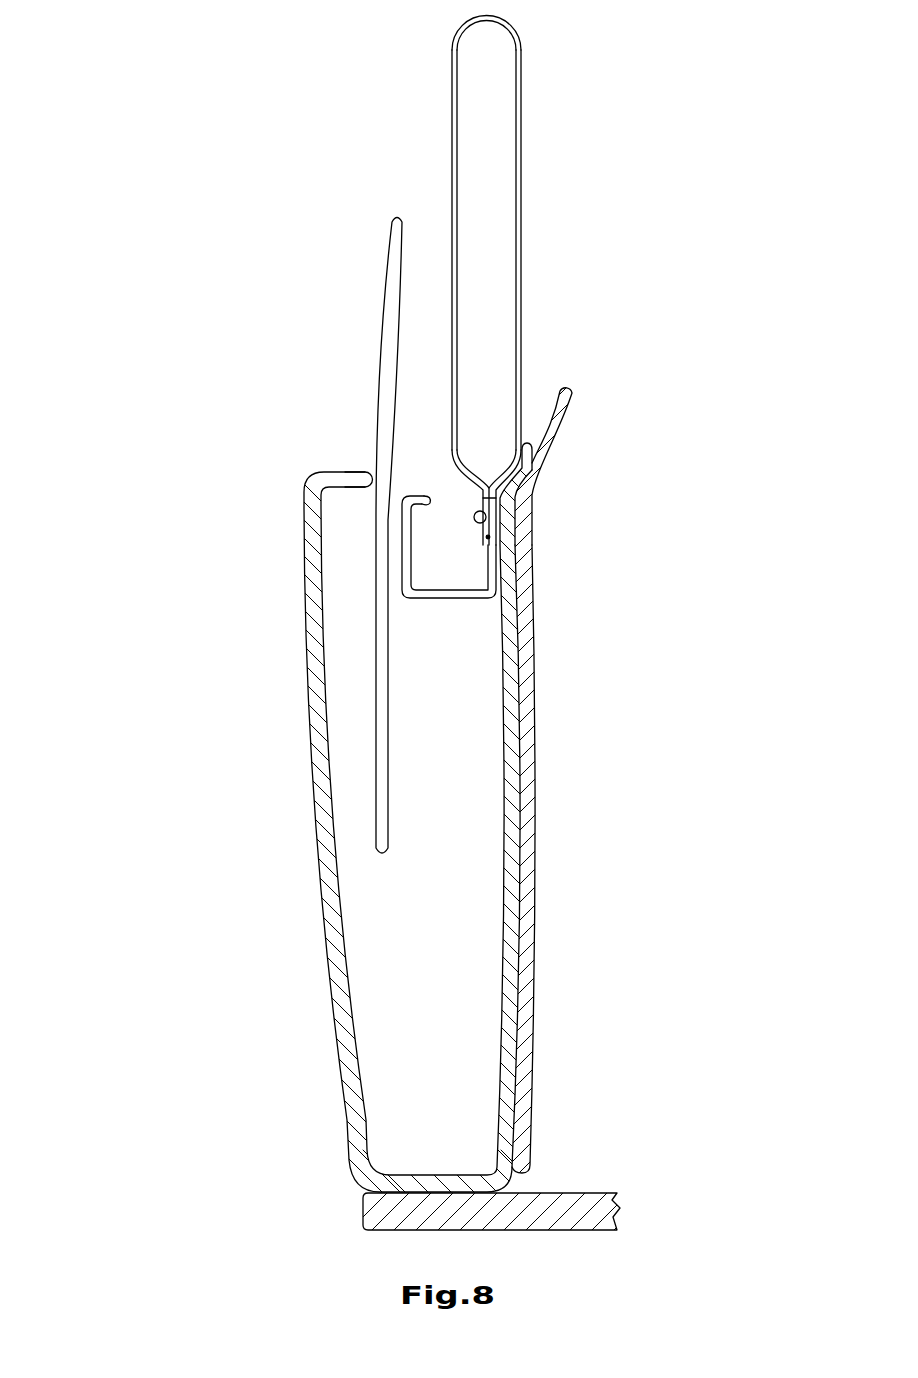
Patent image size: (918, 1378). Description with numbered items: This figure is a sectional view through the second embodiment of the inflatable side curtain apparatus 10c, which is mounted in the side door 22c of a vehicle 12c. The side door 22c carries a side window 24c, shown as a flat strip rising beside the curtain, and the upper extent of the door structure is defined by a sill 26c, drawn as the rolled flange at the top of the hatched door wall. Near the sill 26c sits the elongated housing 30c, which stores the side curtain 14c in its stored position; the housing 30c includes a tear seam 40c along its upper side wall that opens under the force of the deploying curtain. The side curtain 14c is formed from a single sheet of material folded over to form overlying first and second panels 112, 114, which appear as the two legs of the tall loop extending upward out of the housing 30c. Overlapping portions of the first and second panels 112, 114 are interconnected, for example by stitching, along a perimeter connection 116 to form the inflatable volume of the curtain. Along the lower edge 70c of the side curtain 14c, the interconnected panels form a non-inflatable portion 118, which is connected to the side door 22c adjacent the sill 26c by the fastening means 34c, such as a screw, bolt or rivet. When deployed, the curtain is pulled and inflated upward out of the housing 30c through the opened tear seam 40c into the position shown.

The apparatus 10c is at (664, 313).
The vehicle 12c is at (227, 500).
The side curtain 14c is at (454, 89).
The side door 22c is at (325, 916).
The side window 24c is at (390, 270).
The sill 26c is at (345, 472).
The housing 30c is at (428, 598).
The fastening means 34c is at (474, 517).
The tear seam 40c is at (424, 500).
The lower edge 70c is at (488, 537).
The first panel 112 is at (455, 190).
The second panel 114 is at (517, 190).
The perimeter connection 116 is at (490, 483).
The non-inflatable portion 118 is at (490, 499).